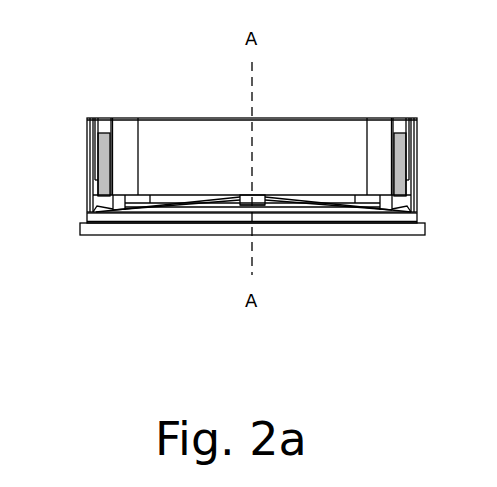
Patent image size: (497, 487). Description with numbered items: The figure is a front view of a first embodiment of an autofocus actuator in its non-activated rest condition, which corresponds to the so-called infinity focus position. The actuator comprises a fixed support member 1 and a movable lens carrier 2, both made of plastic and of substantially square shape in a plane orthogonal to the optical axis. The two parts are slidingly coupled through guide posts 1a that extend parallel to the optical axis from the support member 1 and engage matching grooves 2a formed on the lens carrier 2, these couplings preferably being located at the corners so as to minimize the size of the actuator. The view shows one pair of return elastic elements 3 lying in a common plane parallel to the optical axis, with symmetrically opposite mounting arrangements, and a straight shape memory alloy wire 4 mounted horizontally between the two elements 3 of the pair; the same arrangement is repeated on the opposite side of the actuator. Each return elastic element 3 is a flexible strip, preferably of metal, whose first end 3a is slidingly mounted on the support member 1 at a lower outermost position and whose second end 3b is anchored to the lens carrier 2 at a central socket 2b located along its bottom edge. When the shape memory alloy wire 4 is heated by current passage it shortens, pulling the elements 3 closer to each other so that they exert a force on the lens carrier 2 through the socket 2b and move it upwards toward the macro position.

The fixed support member 1 is at (163, 223).
The guide post 1a is at (103, 167).
The movable lens carrier 2 is at (327, 130).
The groove 2a is at (105, 128).
The central socket 2b is at (258, 195).
The return elastic element 3 is at (160, 203).
The first end 3a is at (95, 212).
The second end 3b is at (248, 205).
The shape memory alloy wire 4 is at (305, 207).